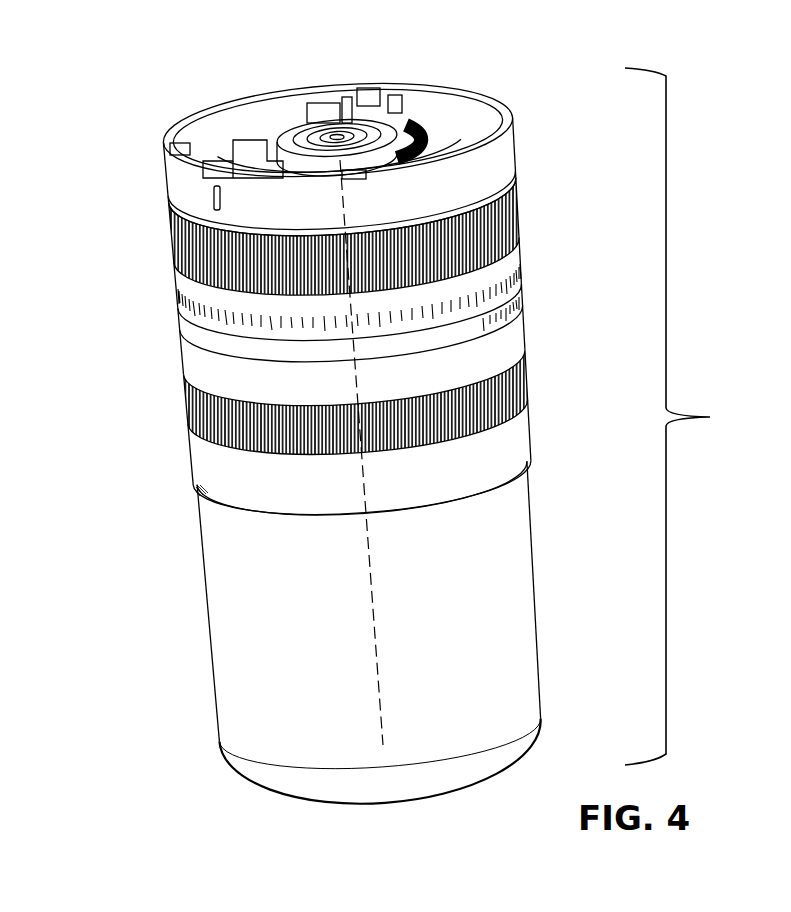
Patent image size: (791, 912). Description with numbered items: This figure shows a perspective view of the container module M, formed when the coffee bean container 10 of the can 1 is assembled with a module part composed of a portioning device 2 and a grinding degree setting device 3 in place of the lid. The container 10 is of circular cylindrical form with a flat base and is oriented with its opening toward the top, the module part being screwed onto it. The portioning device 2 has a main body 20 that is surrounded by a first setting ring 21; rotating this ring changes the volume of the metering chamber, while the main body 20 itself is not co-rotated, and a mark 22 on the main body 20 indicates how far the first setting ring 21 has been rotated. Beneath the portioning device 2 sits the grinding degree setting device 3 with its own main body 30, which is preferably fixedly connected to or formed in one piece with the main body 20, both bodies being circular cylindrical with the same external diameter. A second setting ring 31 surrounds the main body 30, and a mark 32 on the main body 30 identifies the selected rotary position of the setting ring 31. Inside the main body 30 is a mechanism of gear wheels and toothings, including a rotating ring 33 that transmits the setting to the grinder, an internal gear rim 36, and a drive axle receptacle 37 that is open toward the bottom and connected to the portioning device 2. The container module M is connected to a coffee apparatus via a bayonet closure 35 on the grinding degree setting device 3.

The can 1 is at (183, 598).
The portioning device 2 is at (145, 383).
The grinding degree setting device 3 is at (125, 173).
The coffee bean container 10 is at (526, 591).
The main body 20 is at (526, 439).
The first setting ring 21 is at (535, 373).
The mark 22 is at (527, 330).
The main body 30 is at (517, 146).
The second setting ring 31 is at (524, 212).
The mark 32 is at (521, 268).
The rotating ring 33 is at (307, 125).
The bayonet closure 35 is at (368, 88).
The internal gear rim 36 is at (423, 127).
The drive axle receptacle 37 is at (347, 128).
The container module M is at (685, 416).